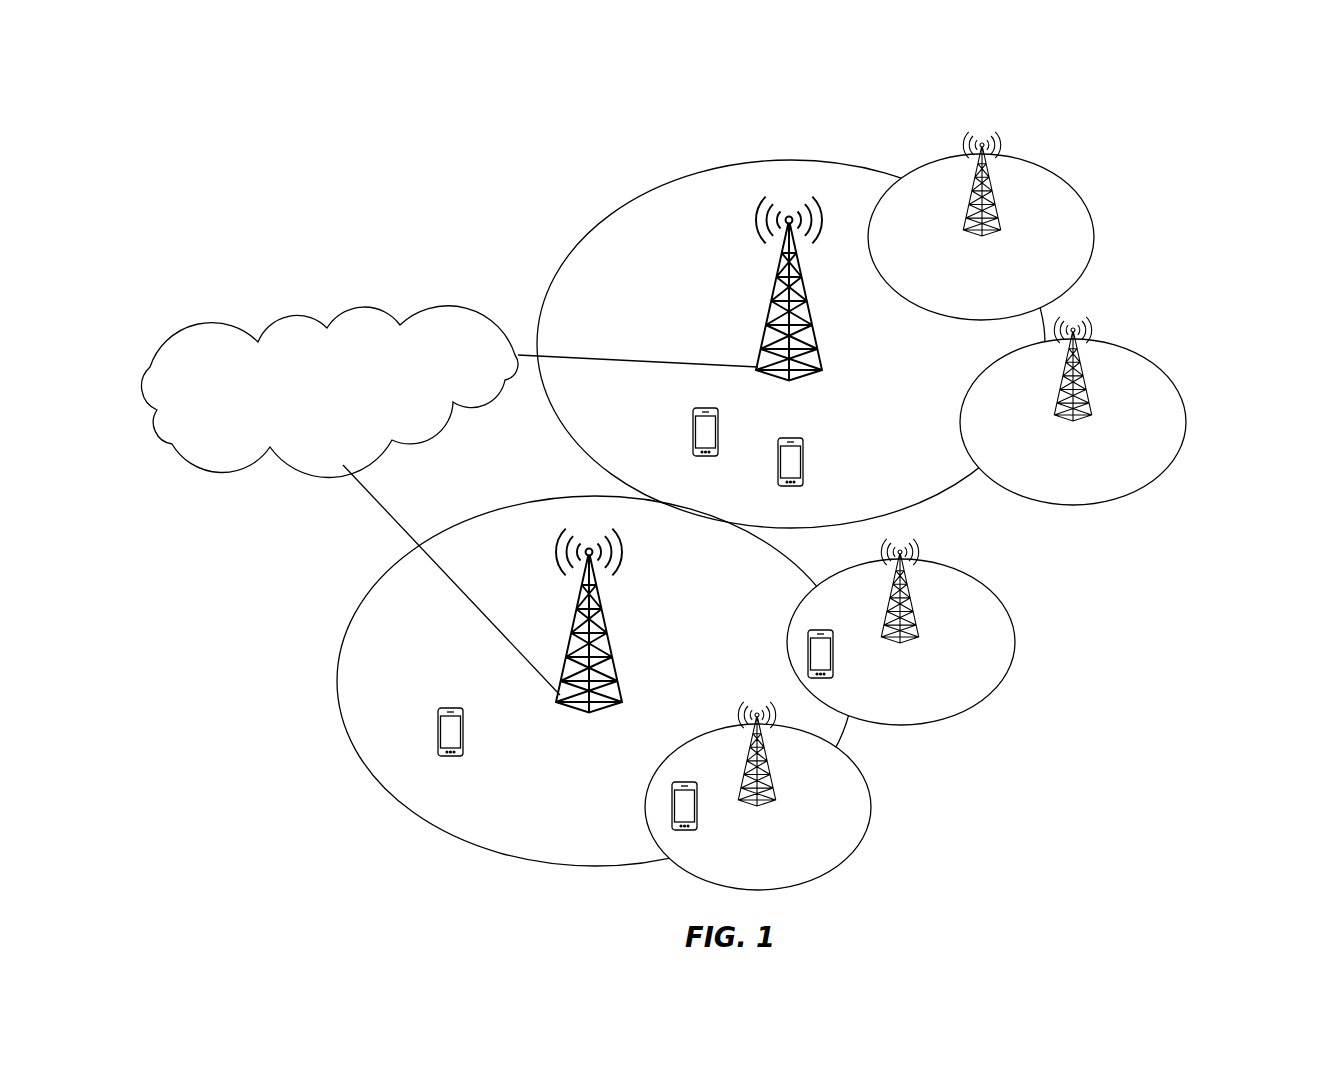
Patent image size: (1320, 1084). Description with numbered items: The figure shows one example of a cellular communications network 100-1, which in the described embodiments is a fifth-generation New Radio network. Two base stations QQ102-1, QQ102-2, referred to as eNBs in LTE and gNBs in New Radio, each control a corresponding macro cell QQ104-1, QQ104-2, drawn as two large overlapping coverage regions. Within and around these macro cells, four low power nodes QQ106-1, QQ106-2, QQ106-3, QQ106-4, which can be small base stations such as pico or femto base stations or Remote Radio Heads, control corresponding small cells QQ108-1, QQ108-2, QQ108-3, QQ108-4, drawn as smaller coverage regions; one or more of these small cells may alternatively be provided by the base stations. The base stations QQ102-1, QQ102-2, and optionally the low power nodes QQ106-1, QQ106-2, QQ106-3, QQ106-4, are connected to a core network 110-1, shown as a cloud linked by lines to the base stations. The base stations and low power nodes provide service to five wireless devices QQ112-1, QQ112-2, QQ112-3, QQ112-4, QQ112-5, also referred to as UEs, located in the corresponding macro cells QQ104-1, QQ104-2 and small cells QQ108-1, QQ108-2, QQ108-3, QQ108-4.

The cellular communications network 100-1 is at (1163, 123).
The base station QQ102-1 is at (610, 645).
The base station QQ102-2 is at (809, 313).
The macro cell QQ104-1 is at (453, 837).
The macro cell QQ104-2 is at (791, 160).
The low power node QQ106-1 is at (775, 783).
The low power node QQ106-2 is at (915, 620).
The low power node QQ106-3 is at (1088, 405).
The low power node QQ106-4 is at (1000, 213).
The small cell QQ108-1 is at (872, 808).
The small cell QQ108-2 is at (1015, 650).
The small cell QQ108-3 is at (1185, 428).
The small cell QQ108-4 is at (1094, 228).
The core network 110-1 is at (346, 434).
The wireless device QQ112-1 is at (712, 758).
The wireless device QQ112-2 is at (836, 606).
The wireless device QQ112-3 is at (463, 727).
The wireless device QQ112-4 is at (718, 440).
The wireless device QQ112-5 is at (805, 462).